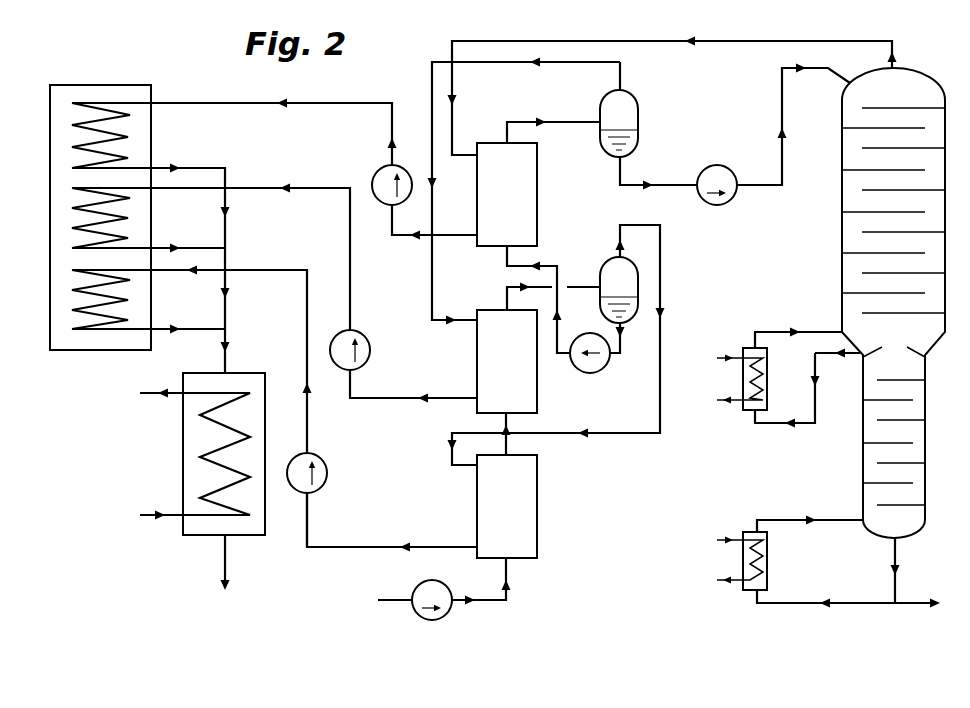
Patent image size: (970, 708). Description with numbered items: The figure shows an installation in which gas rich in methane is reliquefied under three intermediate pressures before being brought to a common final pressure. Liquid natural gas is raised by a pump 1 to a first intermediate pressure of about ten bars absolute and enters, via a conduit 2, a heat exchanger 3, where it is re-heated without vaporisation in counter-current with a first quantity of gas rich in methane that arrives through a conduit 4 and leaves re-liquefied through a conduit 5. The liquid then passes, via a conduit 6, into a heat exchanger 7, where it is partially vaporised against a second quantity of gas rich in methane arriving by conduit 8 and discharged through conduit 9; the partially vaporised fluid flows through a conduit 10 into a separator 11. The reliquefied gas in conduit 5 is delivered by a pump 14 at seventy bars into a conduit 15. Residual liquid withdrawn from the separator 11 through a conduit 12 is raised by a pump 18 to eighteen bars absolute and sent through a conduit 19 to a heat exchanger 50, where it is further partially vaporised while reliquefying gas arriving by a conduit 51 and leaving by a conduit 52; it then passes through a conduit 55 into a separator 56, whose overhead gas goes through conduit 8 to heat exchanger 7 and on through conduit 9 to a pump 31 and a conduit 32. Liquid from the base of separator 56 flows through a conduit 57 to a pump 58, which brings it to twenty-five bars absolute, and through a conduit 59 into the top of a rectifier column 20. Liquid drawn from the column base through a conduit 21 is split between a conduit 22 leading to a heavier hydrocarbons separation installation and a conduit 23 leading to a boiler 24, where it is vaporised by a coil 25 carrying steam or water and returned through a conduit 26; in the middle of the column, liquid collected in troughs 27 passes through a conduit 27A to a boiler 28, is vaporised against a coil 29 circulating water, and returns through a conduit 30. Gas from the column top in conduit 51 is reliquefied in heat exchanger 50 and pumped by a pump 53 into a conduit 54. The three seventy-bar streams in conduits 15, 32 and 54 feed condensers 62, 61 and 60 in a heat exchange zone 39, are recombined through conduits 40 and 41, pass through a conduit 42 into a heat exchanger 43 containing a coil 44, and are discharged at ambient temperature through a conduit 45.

The pump 1 is at (415, 591).
The feed line 2 is at (508, 597).
The heat exchanger 3 is at (538, 517).
The conduit 4 is at (620, 436).
The conduit 5 is at (370, 547).
The transfer line 6 is at (508, 440).
The heat exchanger 7 is at (538, 390).
The conduit 8 is at (432, 305).
The conduit 9 is at (401, 398).
The conduit 10 is at (507, 285).
The separator 11 is at (617, 258).
The conduit 12 is at (622, 341).
The pump 14 is at (327, 473).
The conduit 15 is at (307, 337).
The pump 18 is at (591, 373).
The conduit 19 is at (548, 264).
The rectifier column 20 is at (842, 195).
The conduit 21 is at (897, 583).
The conduit 22 is at (912, 605).
The conduit 23 is at (800, 606).
The boiler 24 is at (767, 549).
The coil 25 is at (767, 567).
The conduit 26 is at (798, 518).
The troughs 27 is at (860, 360).
The conduit 27A is at (817, 398).
The boiler 28 is at (767, 379).
The coil 29 is at (743, 381).
The conduit 30 is at (780, 330).
The pump 31 is at (370, 350).
The conduit 32 is at (321, 190).
The heat exchange zone 39 is at (97, 352).
The conduit 40 is at (226, 229).
The conduit 41 is at (226, 300).
The conduit 42 is at (226, 361).
The heat exchanger 43 is at (183, 451).
The cooling coil 44 is at (242, 422).
The conduit 45 is at (226, 560).
The heat exchanger 50 is at (538, 199).
The conduit 51 is at (713, 43).
The conduit 52 is at (397, 237).
The pump 53 is at (406, 172).
The conduit 54 is at (325, 105).
The conduit 55 is at (570, 124).
The separator 56 is at (639, 121).
The conduit 57 is at (658, 185).
The pump 58 is at (717, 206).
The conduit 59 is at (782, 99).
The condenser 60 is at (72, 128).
The condenser 61 is at (72, 208).
The condenser 62 is at (72, 290).